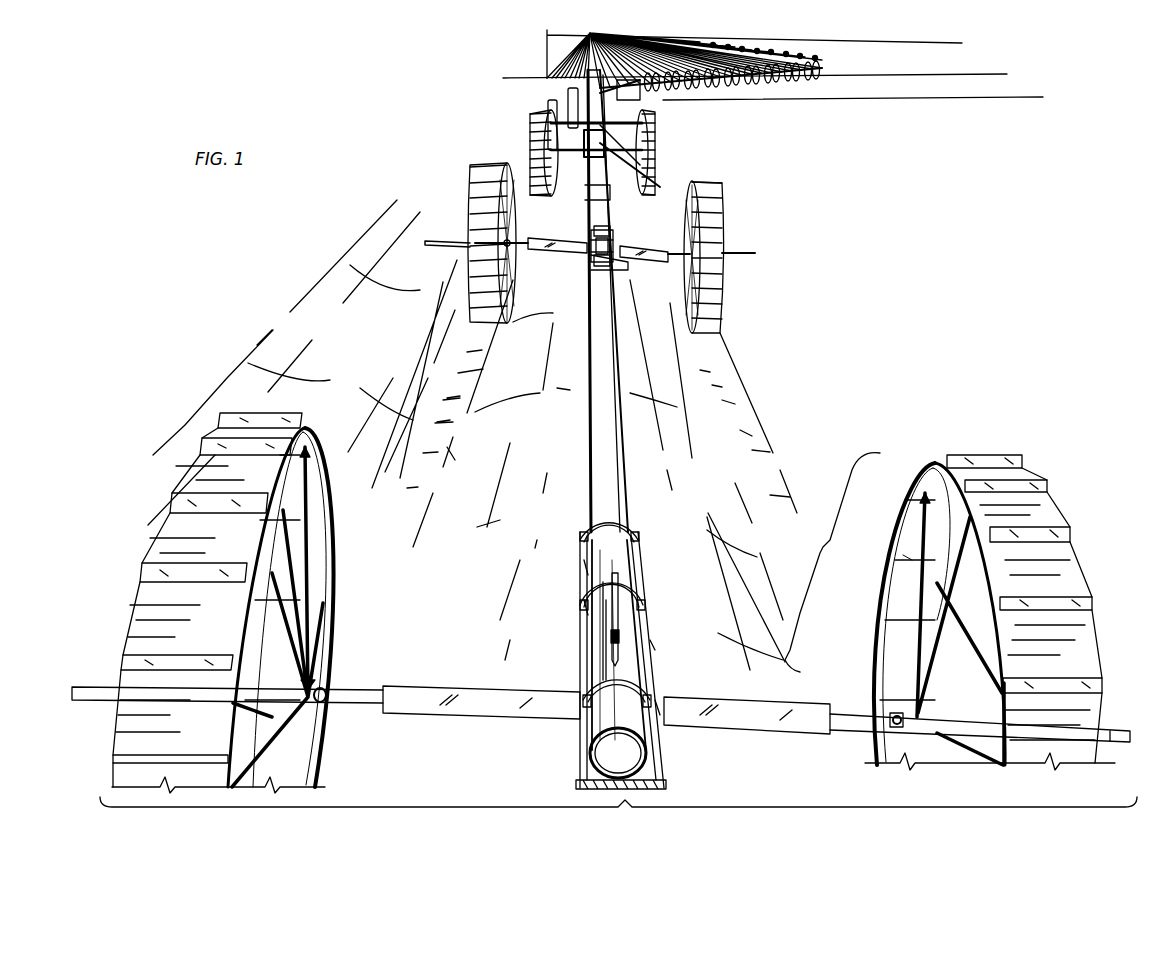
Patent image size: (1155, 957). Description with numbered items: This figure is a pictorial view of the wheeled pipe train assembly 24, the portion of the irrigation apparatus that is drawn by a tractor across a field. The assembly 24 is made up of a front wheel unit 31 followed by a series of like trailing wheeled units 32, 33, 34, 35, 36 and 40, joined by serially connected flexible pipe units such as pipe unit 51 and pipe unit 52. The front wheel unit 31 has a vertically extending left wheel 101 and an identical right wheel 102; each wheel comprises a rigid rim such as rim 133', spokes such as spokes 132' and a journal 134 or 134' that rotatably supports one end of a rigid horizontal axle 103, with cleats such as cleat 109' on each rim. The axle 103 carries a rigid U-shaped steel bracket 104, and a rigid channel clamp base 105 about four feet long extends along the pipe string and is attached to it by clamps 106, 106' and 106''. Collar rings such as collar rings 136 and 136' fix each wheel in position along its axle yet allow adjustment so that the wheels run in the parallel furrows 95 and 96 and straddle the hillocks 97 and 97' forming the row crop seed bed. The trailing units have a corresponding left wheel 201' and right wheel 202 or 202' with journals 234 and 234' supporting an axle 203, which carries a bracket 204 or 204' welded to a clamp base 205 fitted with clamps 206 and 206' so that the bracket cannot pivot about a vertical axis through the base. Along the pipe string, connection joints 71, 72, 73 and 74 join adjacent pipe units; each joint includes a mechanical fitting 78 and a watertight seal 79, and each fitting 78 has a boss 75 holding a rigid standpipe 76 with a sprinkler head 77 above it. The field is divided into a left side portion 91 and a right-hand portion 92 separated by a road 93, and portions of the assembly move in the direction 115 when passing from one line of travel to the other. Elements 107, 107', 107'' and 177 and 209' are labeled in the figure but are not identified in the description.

The wheeled pipe train assembly 24 is at (784, 40).
The front wheel unit 31 is at (618, 794).
The trailing wheeled unit 32 is at (786, 192).
The trailing wheeled unit 33 is at (713, 133).
The trailing wheeled unit 34 is at (548, 104).
The trailing wheeled unit 35 is at (568, 92).
The trailing wheeled unit 36 is at (590, 82).
The wheeled unit 40 is at (987, 332).
The pipe unit 51 is at (618, 470).
The pipe unit 52 is at (583, 158).
The connection joint 71 is at (540, 625).
The connection joint 72 is at (592, 240).
The joint element 73 is at (658, 184).
The joint element 74 is at (660, 120).
The boss 75 is at (625, 672).
The rigid standpipe 76 is at (620, 636).
The sprinkler head 77 is at (620, 580).
The mechanical fitting 78 is at (606, 673).
The seal 79 is at (603, 627).
The left side portion 91 is at (754, 54).
The righthand portion 92 is at (853, 125).
The road 93 is at (755, 82).
The furrow 95 is at (760, 478).
The furrow 96 is at (422, 472).
The hillock 97 is at (284, 362).
The hillock 97' is at (536, 581).
The left wheel 101 is at (831, 562).
The right wheel 102 is at (338, 605).
The axle 103 is at (365, 712).
The bracket 104 is at (492, 720).
The clamp base 105 is at (650, 768).
The clamp 106 is at (641, 525).
The clamp 106' is at (649, 596).
The clamp 106'' is at (649, 688).
The central sheet area 107 is at (523, 435).
The right fan lines 107' is at (706, 47).
The left fan lines 107'' is at (563, 40).
The cleat 109' is at (987, 610).
The direction 115 is at (712, 90).
The spokes 132' is at (927, 629).
The wheel rim 133' is at (875, 568).
The journal 134 is at (311, 617).
The journal 134' is at (859, 675).
The collar ring 136 is at (354, 682).
The collar ring 136' is at (853, 684).
The mast collar 177 is at (586, 194).
The left wheel 201' is at (712, 156).
The right wheel 202 is at (463, 243).
The right wheel 202' is at (514, 153).
The axle 203 is at (455, 248).
The bracket 204 is at (598, 257).
The bracket 204' is at (631, 165).
The clamp base 205 is at (584, 272).
The clamp 206 is at (623, 238).
The clamp 206' is at (626, 238).
The right paddle wheel 209' is at (736, 257).
The journal 234 is at (525, 222).
The journal 234' is at (665, 272).